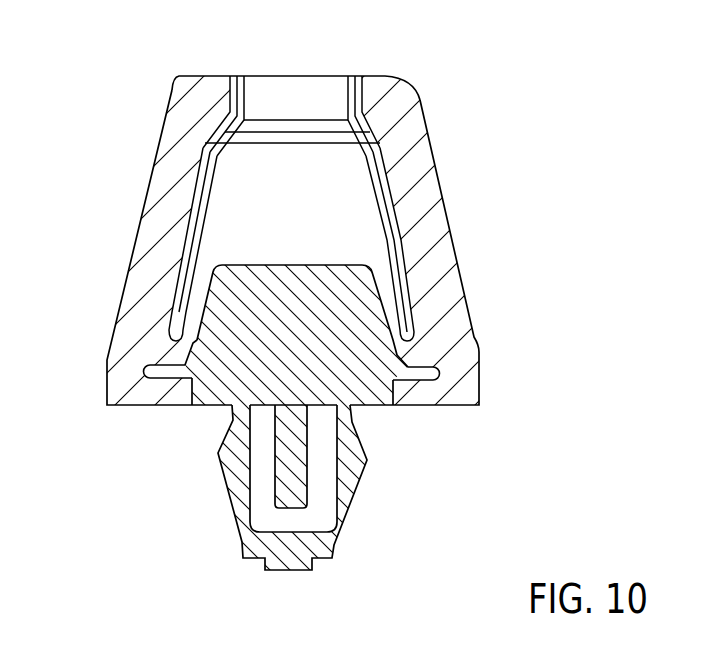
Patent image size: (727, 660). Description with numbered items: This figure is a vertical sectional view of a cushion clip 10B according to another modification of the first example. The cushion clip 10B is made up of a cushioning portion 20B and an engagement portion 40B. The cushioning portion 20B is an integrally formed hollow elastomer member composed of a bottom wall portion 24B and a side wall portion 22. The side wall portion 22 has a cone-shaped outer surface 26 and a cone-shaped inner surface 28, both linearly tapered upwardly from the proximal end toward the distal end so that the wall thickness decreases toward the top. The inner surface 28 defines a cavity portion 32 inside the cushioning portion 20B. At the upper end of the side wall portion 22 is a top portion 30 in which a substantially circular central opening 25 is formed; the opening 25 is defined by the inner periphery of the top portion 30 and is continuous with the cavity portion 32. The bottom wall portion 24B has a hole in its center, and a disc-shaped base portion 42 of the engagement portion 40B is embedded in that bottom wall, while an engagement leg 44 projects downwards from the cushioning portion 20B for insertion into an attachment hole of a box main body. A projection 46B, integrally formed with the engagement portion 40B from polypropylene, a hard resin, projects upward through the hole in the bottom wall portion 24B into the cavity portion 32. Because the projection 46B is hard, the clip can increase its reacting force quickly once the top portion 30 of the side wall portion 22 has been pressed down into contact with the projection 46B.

The cushion clip 10B is at (425, 74).
The cushioning portion 20B is at (440, 148).
The side wall portion 22 is at (175, 187).
The central opening 25 is at (282, 100).
The outer surface 26 is at (447, 207).
The inner surface 28 is at (392, 264).
The top portion 30 is at (380, 110).
The cavity portion 32 is at (248, 167).
The bottom wall portion 24B is at (417, 325).
The projection 46B is at (272, 327).
The base portion 42 is at (427, 375).
The engagement portion 40B is at (378, 468).
The engagement leg 44 is at (323, 547).